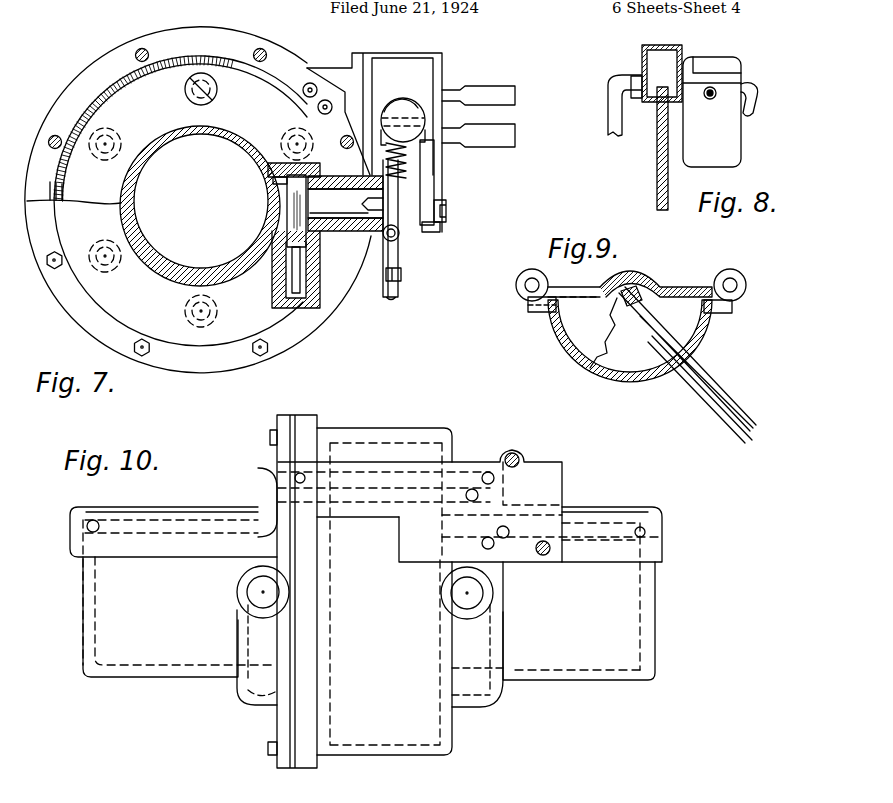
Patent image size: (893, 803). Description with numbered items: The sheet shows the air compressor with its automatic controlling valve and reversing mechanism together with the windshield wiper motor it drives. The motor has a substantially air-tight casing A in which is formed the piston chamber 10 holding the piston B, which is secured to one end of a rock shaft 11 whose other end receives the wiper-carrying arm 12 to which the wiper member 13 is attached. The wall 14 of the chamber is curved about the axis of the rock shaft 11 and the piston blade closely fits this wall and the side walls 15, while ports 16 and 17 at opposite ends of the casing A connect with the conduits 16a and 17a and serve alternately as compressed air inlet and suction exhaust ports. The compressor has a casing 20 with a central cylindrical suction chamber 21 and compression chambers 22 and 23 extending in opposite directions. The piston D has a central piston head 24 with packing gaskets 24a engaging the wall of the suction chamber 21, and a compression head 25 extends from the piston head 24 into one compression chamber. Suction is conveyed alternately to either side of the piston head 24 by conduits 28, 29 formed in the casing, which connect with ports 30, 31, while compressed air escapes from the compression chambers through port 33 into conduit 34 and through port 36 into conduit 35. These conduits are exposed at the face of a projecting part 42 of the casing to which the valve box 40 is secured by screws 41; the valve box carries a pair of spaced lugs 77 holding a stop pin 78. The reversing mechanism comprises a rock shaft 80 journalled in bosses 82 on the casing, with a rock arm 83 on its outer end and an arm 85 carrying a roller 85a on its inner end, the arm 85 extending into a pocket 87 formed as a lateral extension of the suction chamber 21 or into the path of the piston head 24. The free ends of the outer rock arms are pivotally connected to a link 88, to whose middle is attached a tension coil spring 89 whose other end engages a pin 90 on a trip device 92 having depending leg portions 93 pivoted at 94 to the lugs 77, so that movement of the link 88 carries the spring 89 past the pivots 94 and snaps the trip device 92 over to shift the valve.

In FIG. 7, the piston D is at (115, 82).
In FIG. 7, the casing 20 is at (198, 200).
In FIG. 10, the casing 20 is at (136, 692).
In FIG. 7, the suction chamber 21 is at (242, 53).
In FIG. 10, the suction chamber 21 is at (384, 591).
In FIG. 7, the compression chamber 22 is at (138, 263).
In FIG. 10, the compression chamber 22 is at (179, 617).
In FIG. 10, the compression chamber 23 is at (579, 621).
In FIG. 7, the piston head 24 is at (201, 200).
In FIG. 7, the packing gaskets 24a is at (268, 72).
In FIG. 7, the compression head 25 is at (152, 148).
In FIG. 10, the conduit 28 is at (487, 472).
In FIG. 10, the conduit 29 is at (482, 547).
In FIG. 10, the port 30 is at (303, 477).
In FIG. 7, the port 31 is at (300, 107).
In FIG. 10, the port 31 is at (440, 544).
In FIG. 10, the port 33 is at (95, 532).
In FIG. 10, the conduit 34 is at (185, 520).
In FIG. 10, the conduit 35 is at (505, 538).
In FIG. 10, the port 36 is at (646, 532).
In FIG. 7, the valve box 40 is at (478, 81).
In FIG. 7, the screws 41 is at (467, 118).
In FIG. 10, the screws 41 is at (518, 458).
In FIG. 7, the projecting part 42 is at (345, 74).
In FIG. 10, the projecting part 42 is at (565, 482).
In FIG. 7, the lugs 77 is at (383, 105).
In FIG. 7, the stop pin 78 is at (380, 132).
In FIG. 7, the rock shaft 80 is at (333, 162).
In FIG. 7, the bosses 82 is at (330, 240).
In FIG. 10, the bosses 82 is at (447, 600).
In FIG. 7, the rock arm 83 is at (380, 267).
In FIG. 7, the arm 85 is at (287, 218).
In FIG. 7, the roller 85a is at (282, 303).
In FIG. 7, the pocket 87 is at (295, 308).
In FIG. 10, the pocket 87 is at (258, 692).
In FIG. 7, the link 88 is at (397, 271).
In FIG. 7, the tension coil spring 89 is at (397, 227).
In FIG. 7, the pin 90 is at (418, 150).
In FIG. 7, the trip device 92 is at (418, 176).
In FIG. 7, the leg portions 93 is at (436, 196).
In FIG. 7, the pivots 94 is at (441, 227).
In FIG. 7, the side walls 15 is at (427, 140).
In FIG. 9, the side walls 15 is at (650, 317).
In FIG. 8, the port 16 is at (710, 100).
In FIG. 9, the port 16 is at (530, 305).
In FIG. 7, the conduit 16a is at (498, 132).
In FIG. 9, the port 17 is at (730, 307).
In FIG. 7, the conduit 17a is at (500, 97).
In FIG. 9, the piston chamber 10 is at (603, 350).
In FIG. 8, the rock shaft 11 is at (650, 75).
In FIG. 9, the rock shaft 11 is at (633, 290).
In FIG. 8, the wiper-carrying arm 12 is at (617, 92).
In FIG. 9, the wiper-carrying arm 12 is at (722, 382).
In FIG. 9, the wiper member 13 is at (752, 417).
In FIG. 9, the wall 14 is at (628, 380).
In FIG. 8, the casing A is at (735, 143).
In FIG. 9, the casing A is at (735, 348).
In FIG. 9, the piston B is at (660, 325).